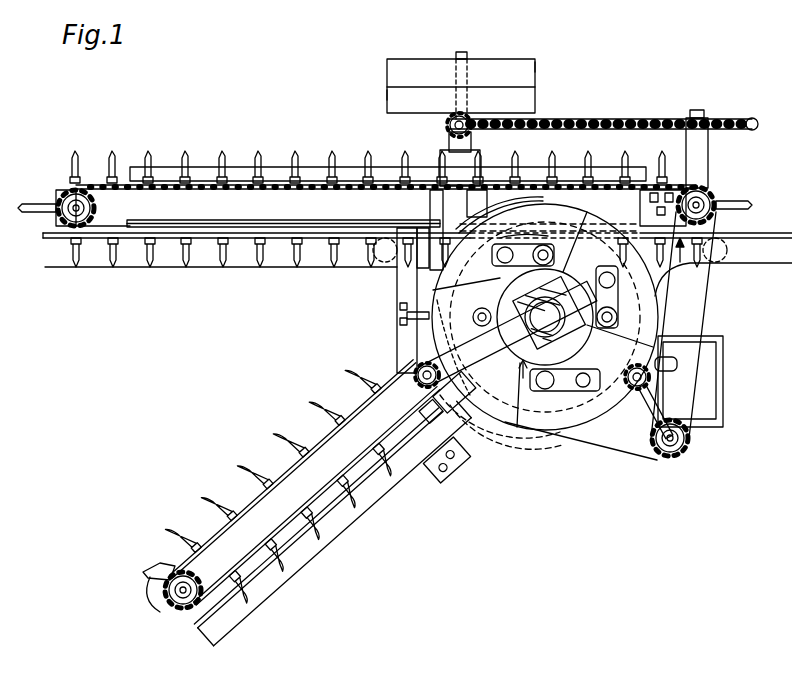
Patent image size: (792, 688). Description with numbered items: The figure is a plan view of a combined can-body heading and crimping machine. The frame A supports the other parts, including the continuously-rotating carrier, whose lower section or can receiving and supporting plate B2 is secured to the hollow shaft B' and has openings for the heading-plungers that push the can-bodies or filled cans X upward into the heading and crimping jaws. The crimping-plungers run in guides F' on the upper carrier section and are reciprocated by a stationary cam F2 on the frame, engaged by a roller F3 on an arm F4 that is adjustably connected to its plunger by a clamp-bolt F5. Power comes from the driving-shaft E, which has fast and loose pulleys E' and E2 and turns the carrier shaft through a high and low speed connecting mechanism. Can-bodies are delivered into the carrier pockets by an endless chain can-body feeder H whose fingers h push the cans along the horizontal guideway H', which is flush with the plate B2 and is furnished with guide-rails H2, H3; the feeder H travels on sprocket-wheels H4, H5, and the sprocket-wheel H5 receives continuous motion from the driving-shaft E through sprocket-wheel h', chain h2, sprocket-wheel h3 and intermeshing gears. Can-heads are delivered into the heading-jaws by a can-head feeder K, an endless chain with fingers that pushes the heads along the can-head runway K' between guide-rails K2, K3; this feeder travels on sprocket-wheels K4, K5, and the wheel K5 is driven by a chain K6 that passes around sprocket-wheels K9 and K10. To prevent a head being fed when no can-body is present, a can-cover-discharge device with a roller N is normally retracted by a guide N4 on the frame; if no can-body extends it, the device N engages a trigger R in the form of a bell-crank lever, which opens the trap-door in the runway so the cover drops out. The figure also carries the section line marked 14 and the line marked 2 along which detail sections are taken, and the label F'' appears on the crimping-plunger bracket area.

The driving-shaft E is at (461, 70).
The loose pulley E2 is at (387, 97).
The fast pulley E' is at (553, 70).
The sprocket-wheel h' is at (442, 130).
The chain h2 is at (598, 118).
The sprocket-wheel h3 is at (757, 125).
The frame A is at (709, 170).
The can-body feeder H is at (386, 158).
The fingers h is at (368, 157).
The horizontal guideway H' is at (157, 209).
The guide-rail H2 is at (174, 224).
The guide-rail H3 is at (55, 240).
The sprocket-wheel H4 is at (62, 200).
The sprocket-wheel H5 is at (717, 201).
The guide N4 is at (462, 209).
The lower section B2 is at (556, 430).
The hollow shaft B' is at (545, 316).
The stationary cam F2 is at (504, 335).
The sprocket-wheel K5 is at (414, 370).
The arm F4 is at (523, 256).
The clamp-bolt F5 is at (501, 244).
The guides F' is at (566, 290).
The roller F3 is at (617, 281).
The roller bracket F'' is at (571, 359).
The roller pin 14 is at (561, 375).
The direction arrow 2 is at (550, 251).
The chain K6 is at (708, 324).
The sprocket-wheel K9 is at (652, 388).
The sprocket-wheel K10 is at (691, 442).
The roller N is at (365, 300).
The filled cans X is at (397, 270).
The trigger R is at (397, 330).
The can-head feeder K is at (303, 480).
The can-head runway K' is at (317, 518).
The guide-rail K2 is at (305, 550).
The guide-rail K3 is at (458, 446).
The sprocket-wheel K4 is at (177, 597).